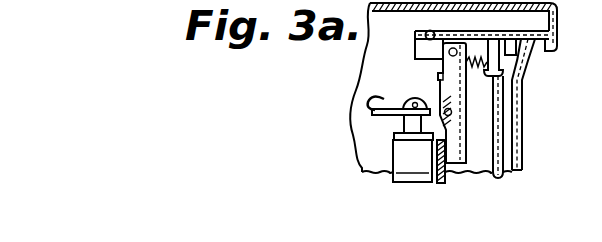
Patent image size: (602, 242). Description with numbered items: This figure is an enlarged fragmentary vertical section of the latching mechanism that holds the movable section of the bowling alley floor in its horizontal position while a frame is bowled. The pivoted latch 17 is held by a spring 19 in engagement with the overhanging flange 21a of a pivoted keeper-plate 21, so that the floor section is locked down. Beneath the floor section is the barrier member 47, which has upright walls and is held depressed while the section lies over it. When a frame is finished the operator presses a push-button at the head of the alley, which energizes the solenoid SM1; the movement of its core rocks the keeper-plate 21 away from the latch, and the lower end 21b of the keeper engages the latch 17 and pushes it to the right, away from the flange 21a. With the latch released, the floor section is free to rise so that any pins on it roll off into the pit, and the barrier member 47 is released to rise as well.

The spring 19 is at (513, 81).
The pivoted latch 17 is at (486, 99).
The barrier member 47 is at (521, 131).
The pivoted keeper-plate 21 is at (368, 99).
The overhanging flange 21a is at (437, 79).
The lower end of the keeper 21b is at (468, 141).
The solenoid SM1 is at (400, 153).